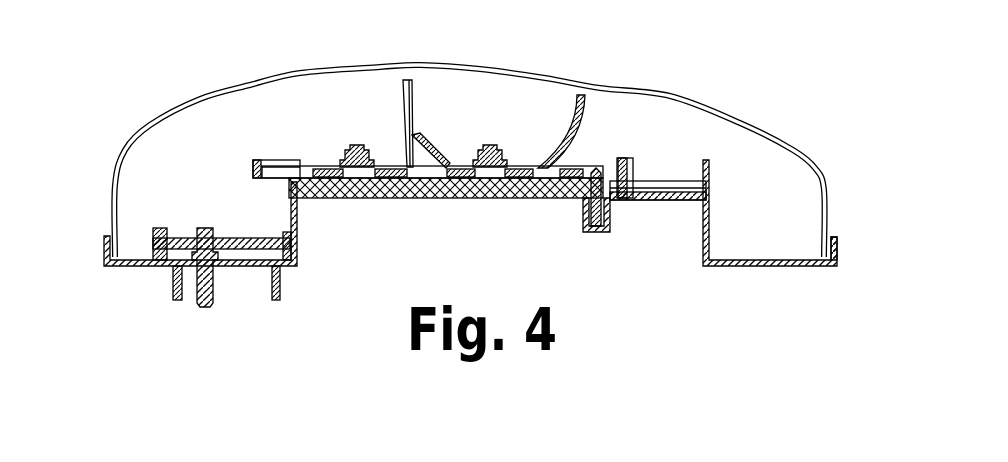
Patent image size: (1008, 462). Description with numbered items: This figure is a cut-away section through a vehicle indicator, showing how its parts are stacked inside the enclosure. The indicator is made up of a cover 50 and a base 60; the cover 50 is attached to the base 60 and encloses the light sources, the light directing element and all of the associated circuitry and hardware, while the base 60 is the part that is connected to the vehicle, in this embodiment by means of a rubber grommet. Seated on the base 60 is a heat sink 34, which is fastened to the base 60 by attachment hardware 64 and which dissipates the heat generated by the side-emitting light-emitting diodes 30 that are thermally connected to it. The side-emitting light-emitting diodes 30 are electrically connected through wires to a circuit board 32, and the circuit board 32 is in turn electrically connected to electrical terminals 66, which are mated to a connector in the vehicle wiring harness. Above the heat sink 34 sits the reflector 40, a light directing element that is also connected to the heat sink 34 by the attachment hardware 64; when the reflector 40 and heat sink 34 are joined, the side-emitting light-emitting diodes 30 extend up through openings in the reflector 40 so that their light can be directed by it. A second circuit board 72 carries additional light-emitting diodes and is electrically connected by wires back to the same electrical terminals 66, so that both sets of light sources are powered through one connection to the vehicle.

The side-emitting light-emitting diodes 30 is at (356, 143).
The circuit board 32 is at (181, 237).
The heat sink 34 is at (552, 196).
The reflector 40 is at (393, 87).
The cover 50 is at (829, 183).
The base 60 is at (838, 247).
The attachment hardware 64 is at (608, 168).
The electrical terminals 66 is at (213, 290).
The circuit board 72 is at (684, 200).